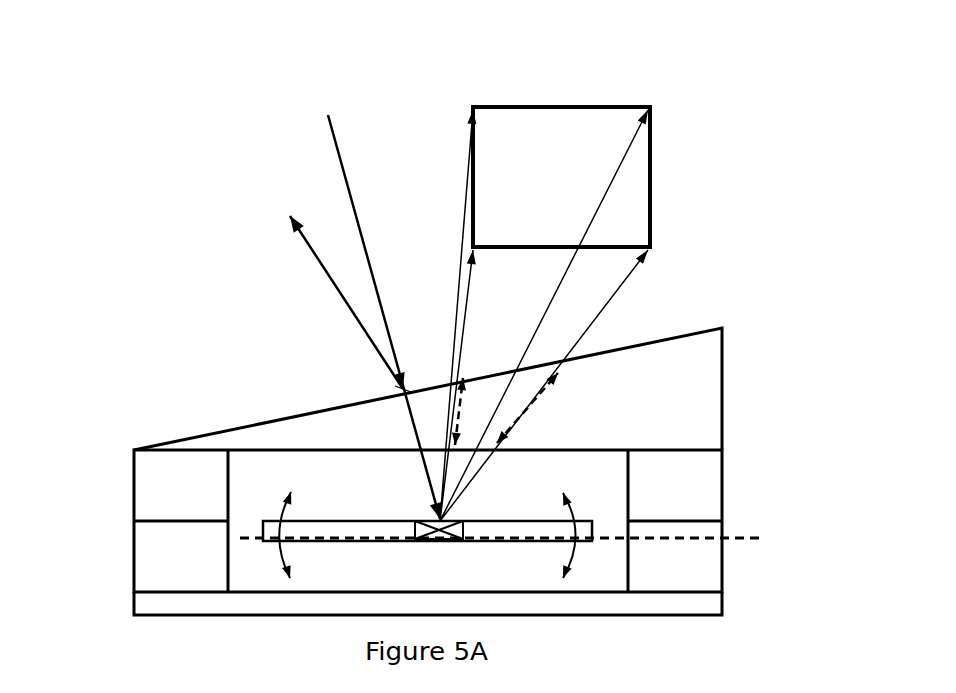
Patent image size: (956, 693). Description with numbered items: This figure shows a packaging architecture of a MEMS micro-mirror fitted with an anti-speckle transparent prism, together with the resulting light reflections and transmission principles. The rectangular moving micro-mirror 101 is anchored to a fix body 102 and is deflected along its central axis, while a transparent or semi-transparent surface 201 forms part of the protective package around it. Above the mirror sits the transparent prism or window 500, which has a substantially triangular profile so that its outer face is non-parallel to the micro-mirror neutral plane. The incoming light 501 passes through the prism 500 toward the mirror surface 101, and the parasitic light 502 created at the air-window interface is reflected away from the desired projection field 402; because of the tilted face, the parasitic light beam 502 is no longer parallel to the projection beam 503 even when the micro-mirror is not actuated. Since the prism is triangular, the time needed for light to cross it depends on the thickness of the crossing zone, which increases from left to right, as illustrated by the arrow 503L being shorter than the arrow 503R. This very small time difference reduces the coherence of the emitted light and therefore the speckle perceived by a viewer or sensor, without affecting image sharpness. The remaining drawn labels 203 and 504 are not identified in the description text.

The micro-mirror 101 is at (313, 532).
The fix body 102 is at (150, 548).
The transparent or semi-transparent surface 201 is at (150, 606).
The spacer/frame layer 203 is at (150, 488).
The projection field 402 is at (605, 125).
The transparent prism or window 500 is at (710, 350).
The incoming light 501 is at (335, 145).
The parasitic light 502 is at (325, 278).
The projection beam 503 is at (466, 214).
The arrow 503L is at (447, 443).
The arrow 503R is at (545, 393).
The point of incidence on cover surface 504 is at (403, 389).